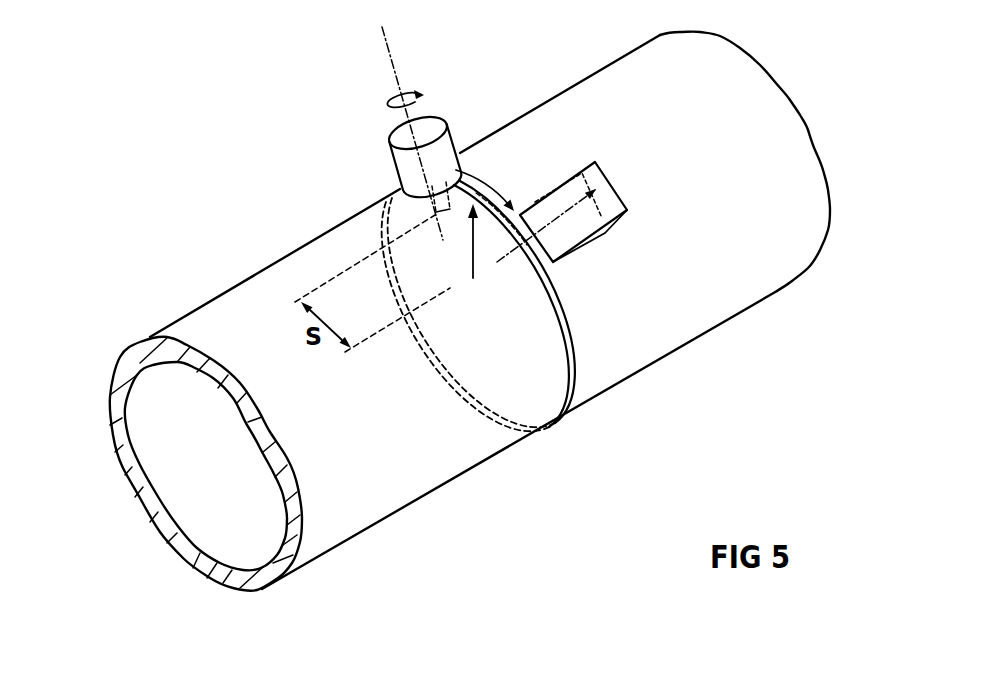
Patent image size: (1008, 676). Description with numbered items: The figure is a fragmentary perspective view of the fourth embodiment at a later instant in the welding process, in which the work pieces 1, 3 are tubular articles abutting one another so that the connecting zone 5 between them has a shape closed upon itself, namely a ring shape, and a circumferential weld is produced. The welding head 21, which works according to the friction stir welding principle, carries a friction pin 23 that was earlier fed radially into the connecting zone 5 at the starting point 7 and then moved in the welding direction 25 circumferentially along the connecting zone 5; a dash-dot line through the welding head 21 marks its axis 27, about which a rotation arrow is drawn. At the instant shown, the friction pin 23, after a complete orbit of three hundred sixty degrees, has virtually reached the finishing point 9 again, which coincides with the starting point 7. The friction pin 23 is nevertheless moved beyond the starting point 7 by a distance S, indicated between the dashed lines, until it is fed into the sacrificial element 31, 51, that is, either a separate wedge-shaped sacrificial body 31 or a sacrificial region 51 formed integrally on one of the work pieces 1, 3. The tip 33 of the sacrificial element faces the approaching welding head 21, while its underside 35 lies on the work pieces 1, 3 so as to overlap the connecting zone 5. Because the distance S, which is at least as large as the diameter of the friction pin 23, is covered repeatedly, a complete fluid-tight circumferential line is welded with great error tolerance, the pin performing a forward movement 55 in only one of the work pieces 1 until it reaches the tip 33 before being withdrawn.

The work piece 1 is at (780, 137).
The work piece 3 is at (162, 522).
The connecting zone 5 is at (578, 394).
The starting point 7 is at (476, 255).
The finishing point 9 is at (476, 255).
The welding head 21 is at (427, 126).
The friction pin 23 is at (401, 205).
The welding direction 25 is at (490, 186).
The rotation axis 27 is at (383, 30).
The sacrificial body 31 is at (656, 255).
The tip 33 is at (530, 264).
The underside 35 is at (589, 236).
The sacrificial region 51 is at (565, 231).
The forward movement 55 is at (535, 256).